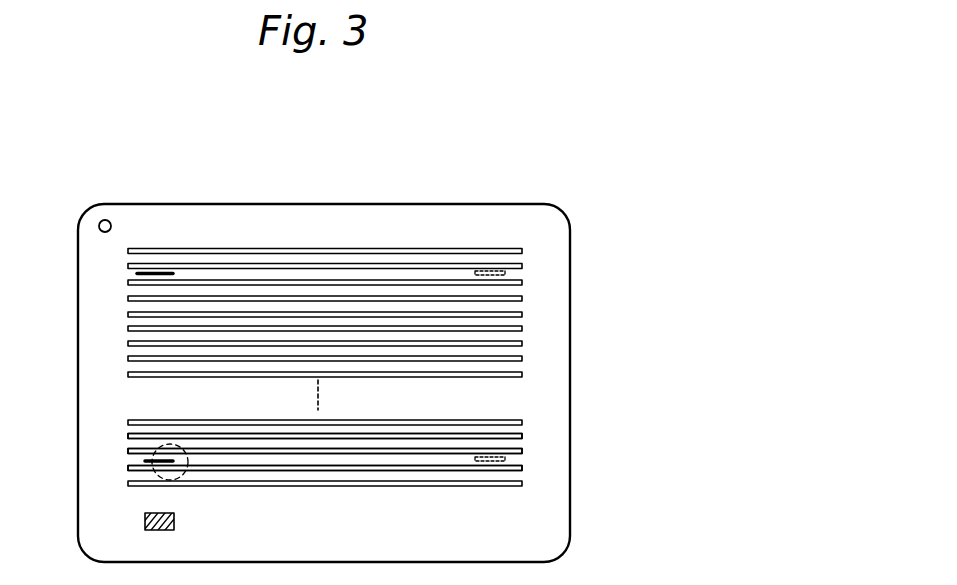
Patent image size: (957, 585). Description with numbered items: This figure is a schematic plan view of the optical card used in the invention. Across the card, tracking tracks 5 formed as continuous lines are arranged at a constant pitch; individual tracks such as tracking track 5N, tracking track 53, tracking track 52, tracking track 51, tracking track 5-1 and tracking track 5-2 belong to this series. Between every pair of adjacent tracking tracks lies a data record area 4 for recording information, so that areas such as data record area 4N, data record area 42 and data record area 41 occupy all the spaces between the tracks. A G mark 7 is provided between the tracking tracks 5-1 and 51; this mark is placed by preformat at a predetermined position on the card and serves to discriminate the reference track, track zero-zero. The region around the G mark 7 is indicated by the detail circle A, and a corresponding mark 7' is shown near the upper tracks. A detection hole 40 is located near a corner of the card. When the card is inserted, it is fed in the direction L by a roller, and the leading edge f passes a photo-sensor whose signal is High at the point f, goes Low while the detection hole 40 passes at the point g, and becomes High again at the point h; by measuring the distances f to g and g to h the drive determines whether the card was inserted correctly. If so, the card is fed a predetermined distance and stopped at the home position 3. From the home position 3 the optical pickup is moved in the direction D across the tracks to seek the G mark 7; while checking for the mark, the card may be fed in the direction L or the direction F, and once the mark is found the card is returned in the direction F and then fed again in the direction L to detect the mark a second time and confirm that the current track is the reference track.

The detection hole 40 is at (112, 226).
The upper mark 7' is at (108, 260).
The G mark 7 is at (108, 462).
The detail region A is at (184, 477).
The home position 3 is at (145, 522).
The tracking tracks 5 is at (128, 376).
The tracking track 5N is at (523, 282).
The data record area 4N is at (517, 290).
The data record area 4 is at (517, 365).
The tracking track 53 is at (523, 425).
The data record area 42 is at (523, 430).
The tracking track 52 is at (523, 437).
The data record area 41 is at (523, 443).
The tracking track 51 is at (523, 448).
The tracking track 5-1 is at (521, 468).
The tracking track 5-2 is at (521, 484).
The direction L is at (276, 175).
The direction F is at (388, 174).
The direction D is at (57, 390).
The leading edge f is at (78, 206).
The point g is at (97, 194).
The point h is at (113, 194).